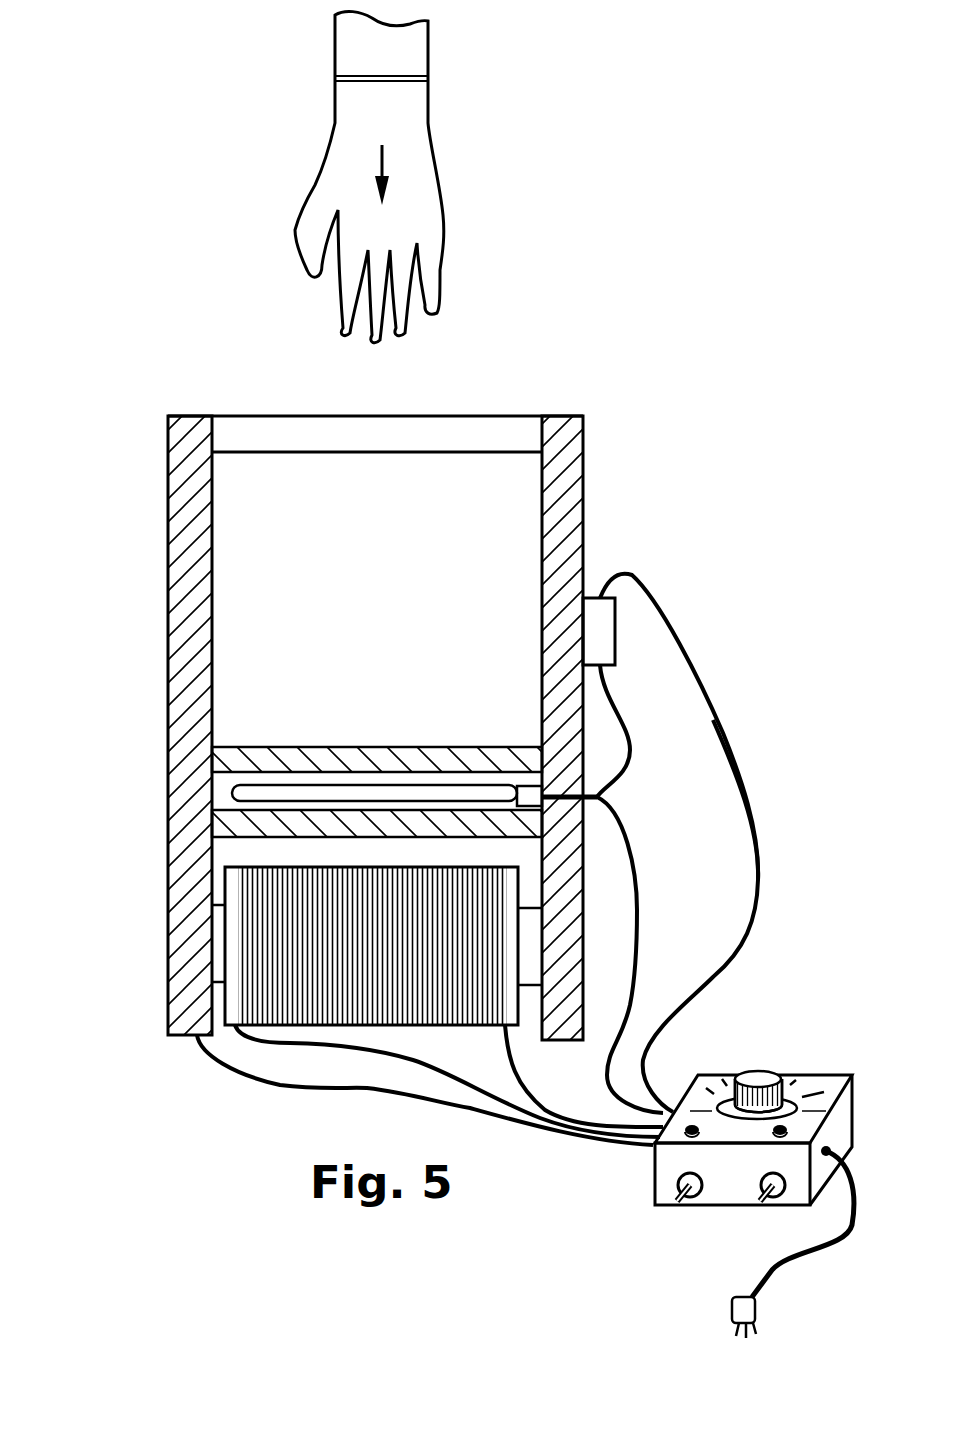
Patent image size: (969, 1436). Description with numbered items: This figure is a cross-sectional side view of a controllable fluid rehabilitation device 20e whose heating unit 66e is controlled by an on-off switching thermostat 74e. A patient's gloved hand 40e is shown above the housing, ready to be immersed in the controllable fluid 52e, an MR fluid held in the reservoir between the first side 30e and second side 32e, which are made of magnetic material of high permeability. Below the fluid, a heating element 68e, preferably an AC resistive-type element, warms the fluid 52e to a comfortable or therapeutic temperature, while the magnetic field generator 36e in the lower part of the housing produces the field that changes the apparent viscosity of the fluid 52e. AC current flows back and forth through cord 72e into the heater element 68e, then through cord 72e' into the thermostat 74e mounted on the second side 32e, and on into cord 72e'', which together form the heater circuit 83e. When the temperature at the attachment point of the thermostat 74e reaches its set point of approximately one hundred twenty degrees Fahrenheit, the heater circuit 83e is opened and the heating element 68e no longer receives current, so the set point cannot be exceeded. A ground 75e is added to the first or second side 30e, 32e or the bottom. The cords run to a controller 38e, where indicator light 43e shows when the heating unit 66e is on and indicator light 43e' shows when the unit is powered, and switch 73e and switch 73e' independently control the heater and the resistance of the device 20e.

The hand 40e is at (402, 123).
The controllable fluid rehabilitation device 20e is at (520, 355).
The first side 30e is at (165, 865).
The second side 32e is at (583, 445).
The controllable fluid 52e is at (388, 640).
The heating element 68e is at (370, 785).
The heating unit 66e is at (232, 787).
The magnetic field generator 36e is at (297, 1027).
The thermostat 74e is at (616, 622).
The cord 72e'' is at (719, 843).
The heater circuit 83e is at (747, 798).
The cord 72e' is at (656, 731).
The cord 72e is at (667, 955).
The ground 75e is at (525, 1140).
The controller 38e is at (775, 1072).
The indicator light 43e is at (636, 1177).
The indicator light 43e' is at (716, 1196).
The switch 73e is at (636, 1235).
The switch 73e' is at (725, 1238).